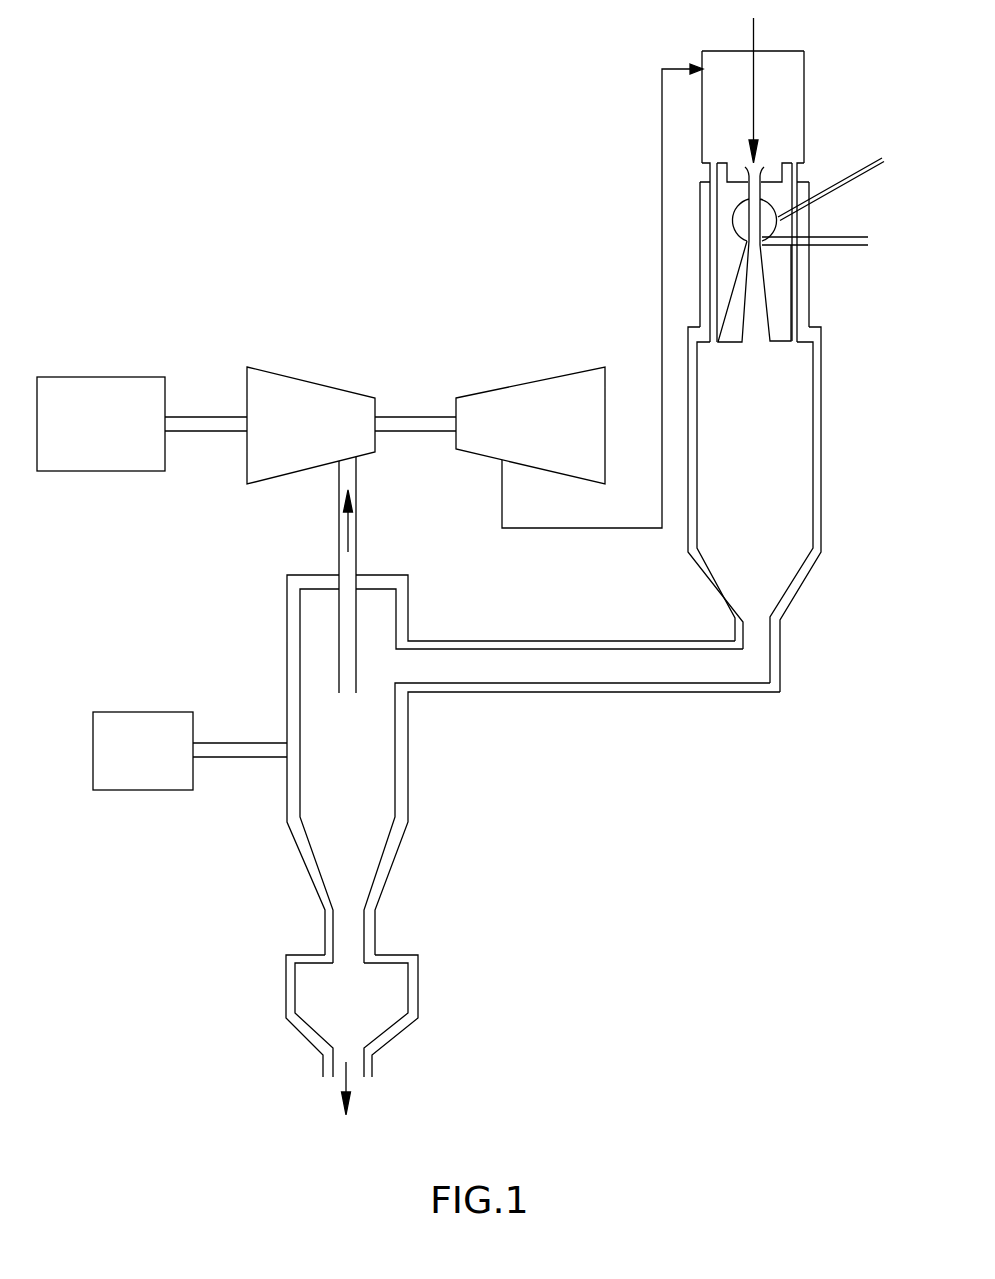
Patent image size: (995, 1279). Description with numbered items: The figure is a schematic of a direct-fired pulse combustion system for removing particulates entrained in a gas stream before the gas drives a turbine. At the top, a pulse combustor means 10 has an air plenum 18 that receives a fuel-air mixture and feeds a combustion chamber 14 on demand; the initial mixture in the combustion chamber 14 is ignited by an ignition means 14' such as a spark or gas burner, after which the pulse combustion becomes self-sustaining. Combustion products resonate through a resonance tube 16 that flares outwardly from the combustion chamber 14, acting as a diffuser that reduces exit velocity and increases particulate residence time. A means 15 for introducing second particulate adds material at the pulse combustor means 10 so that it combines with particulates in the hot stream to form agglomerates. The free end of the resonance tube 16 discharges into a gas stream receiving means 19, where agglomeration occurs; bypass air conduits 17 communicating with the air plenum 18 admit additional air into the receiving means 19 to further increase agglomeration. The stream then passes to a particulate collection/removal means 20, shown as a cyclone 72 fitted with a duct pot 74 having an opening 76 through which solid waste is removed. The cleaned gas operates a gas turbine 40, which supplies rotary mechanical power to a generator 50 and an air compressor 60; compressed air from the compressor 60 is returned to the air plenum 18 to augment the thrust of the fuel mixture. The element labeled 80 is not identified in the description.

The pulse combustor means 10 is at (860, 263).
The combustion chamber 14 is at (694, 206).
The ignition means 14' is at (836, 164).
The means for introducing second particulate 15 is at (842, 237).
The resonance tube 16 is at (742, 297).
The bypass air conduits 17 is at (745, 178).
The air plenum 18 is at (702, 62).
The gas stream receiving means 19 is at (822, 477).
The particulate collection/removal means 20 is at (511, 855).
The gas-operated turbine generator 40 is at (321, 433).
The generator 50 is at (114, 440).
The air compressor 60 is at (559, 440).
The cyclone 72 is at (364, 788).
The duct pot 74 is at (363, 1013).
The opening 76 is at (355, 1077).
The liquid supply 80 is at (163, 762).